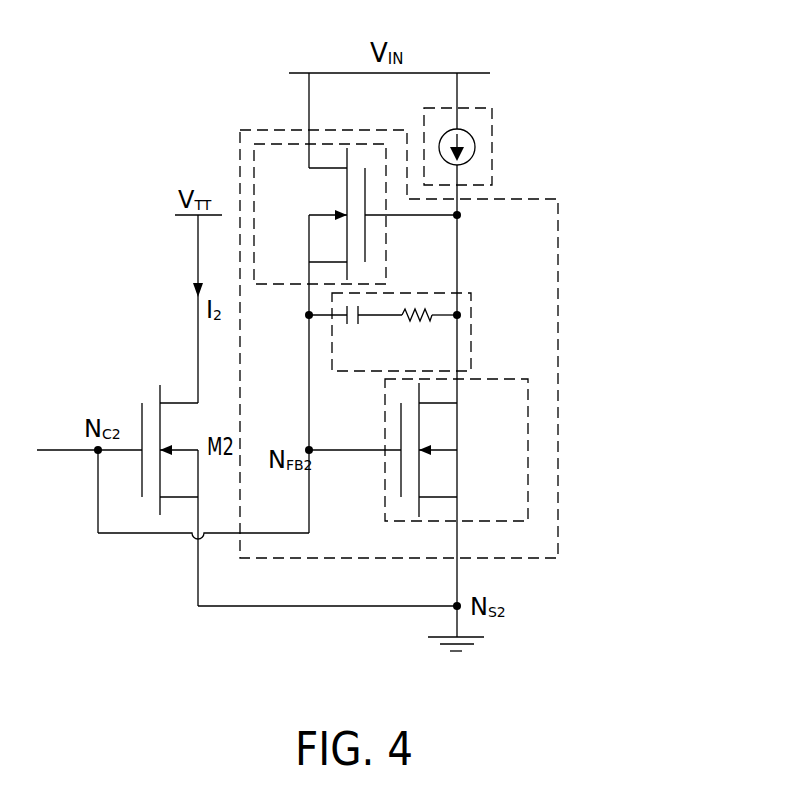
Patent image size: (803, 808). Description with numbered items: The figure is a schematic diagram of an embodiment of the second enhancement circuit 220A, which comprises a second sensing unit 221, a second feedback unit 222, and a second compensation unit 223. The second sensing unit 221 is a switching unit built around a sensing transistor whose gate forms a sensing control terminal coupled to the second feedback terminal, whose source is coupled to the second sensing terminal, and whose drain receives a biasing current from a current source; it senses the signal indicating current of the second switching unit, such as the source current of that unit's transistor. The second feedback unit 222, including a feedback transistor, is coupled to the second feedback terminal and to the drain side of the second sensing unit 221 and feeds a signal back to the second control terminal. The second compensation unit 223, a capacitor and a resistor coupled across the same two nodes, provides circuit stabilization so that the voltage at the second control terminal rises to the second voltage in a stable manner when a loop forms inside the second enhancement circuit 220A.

The second enhancement circuit 220A is at (540, 199).
The second sensing unit 221 is at (528, 472).
The second feedback unit 222 is at (275, 143).
The second compensation unit 223 is at (423, 291).